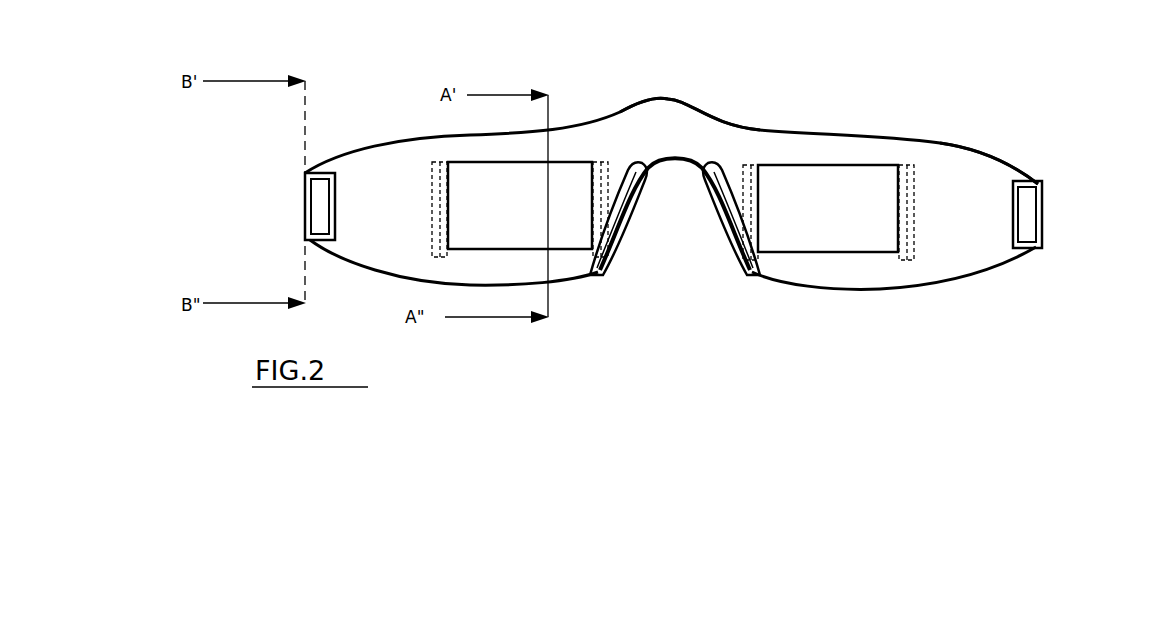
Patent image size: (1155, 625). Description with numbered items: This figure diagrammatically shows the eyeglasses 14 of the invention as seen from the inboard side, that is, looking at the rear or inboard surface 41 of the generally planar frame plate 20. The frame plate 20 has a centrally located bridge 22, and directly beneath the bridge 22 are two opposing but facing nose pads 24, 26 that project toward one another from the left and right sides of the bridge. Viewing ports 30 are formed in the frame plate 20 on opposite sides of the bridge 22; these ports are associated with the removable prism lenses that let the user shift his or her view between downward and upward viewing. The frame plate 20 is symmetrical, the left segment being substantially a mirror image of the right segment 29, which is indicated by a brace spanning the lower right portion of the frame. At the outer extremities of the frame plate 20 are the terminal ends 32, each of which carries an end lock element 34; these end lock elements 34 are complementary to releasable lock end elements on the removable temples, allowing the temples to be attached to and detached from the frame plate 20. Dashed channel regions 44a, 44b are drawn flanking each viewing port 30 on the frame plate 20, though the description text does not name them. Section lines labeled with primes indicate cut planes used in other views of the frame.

The eyeglasses 14 is at (787, 112).
The frame plate 20 is at (877, 136).
The bridge 22 is at (668, 99).
The nose pad 24 is at (630, 237).
The nose pad 26 is at (720, 235).
The right segment 29 is at (1045, 255).
The viewing port 30 is at (515, 213).
The terminal end 32 is at (305, 190).
The end lock element 34 is at (305, 232).
The inboard surface 41 is at (980, 198).
The lens retaining channel 44a is at (431, 192).
The lens retaining channel 44b is at (608, 170).